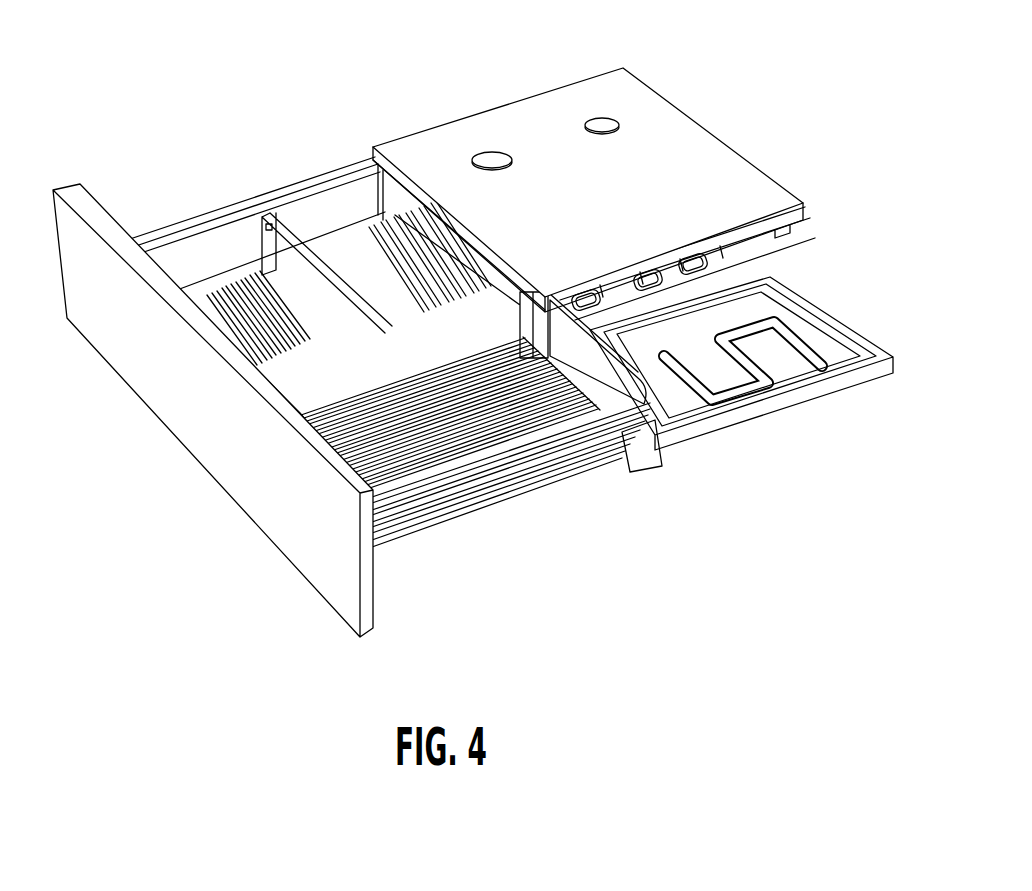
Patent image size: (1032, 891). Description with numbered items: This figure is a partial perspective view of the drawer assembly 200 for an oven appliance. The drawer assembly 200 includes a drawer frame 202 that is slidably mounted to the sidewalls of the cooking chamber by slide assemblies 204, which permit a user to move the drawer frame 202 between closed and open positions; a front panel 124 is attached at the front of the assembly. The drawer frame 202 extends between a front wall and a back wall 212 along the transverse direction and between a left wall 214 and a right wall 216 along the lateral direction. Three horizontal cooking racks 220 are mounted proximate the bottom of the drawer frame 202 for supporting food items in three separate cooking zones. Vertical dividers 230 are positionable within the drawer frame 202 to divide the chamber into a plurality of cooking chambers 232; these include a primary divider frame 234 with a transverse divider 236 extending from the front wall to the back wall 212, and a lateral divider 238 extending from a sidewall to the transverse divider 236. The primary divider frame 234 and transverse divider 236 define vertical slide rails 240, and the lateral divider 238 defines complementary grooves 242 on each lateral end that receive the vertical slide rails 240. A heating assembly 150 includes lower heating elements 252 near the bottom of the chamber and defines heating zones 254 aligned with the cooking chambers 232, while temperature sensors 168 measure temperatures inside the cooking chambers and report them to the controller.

The drawer assembly 200 is at (125, 85).
The front panel 124 is at (200, 428).
The heating assembly 150 is at (803, 347).
The temperature sensors 168 is at (495, 150).
The drawer frame 202 is at (158, 223).
The slide assemblies 204 is at (587, 457).
The back wall 212 is at (690, 420).
The left wall 214 is at (320, 178).
The right wall 216 is at (657, 403).
The horizontal cooking racks 220 is at (443, 433).
The vertical dividers 230 is at (490, 303).
The cooking chambers 232 is at (300, 213).
The primary divider frame 234 is at (450, 237).
The transverse divider 236 is at (435, 335).
The lateral divider 238 is at (343, 200).
The vertical slide rails 240 is at (385, 330).
The complementary grooves 242 is at (255, 228).
The lower heating elements 252 is at (715, 258).
The heating zones 254 is at (752, 338).